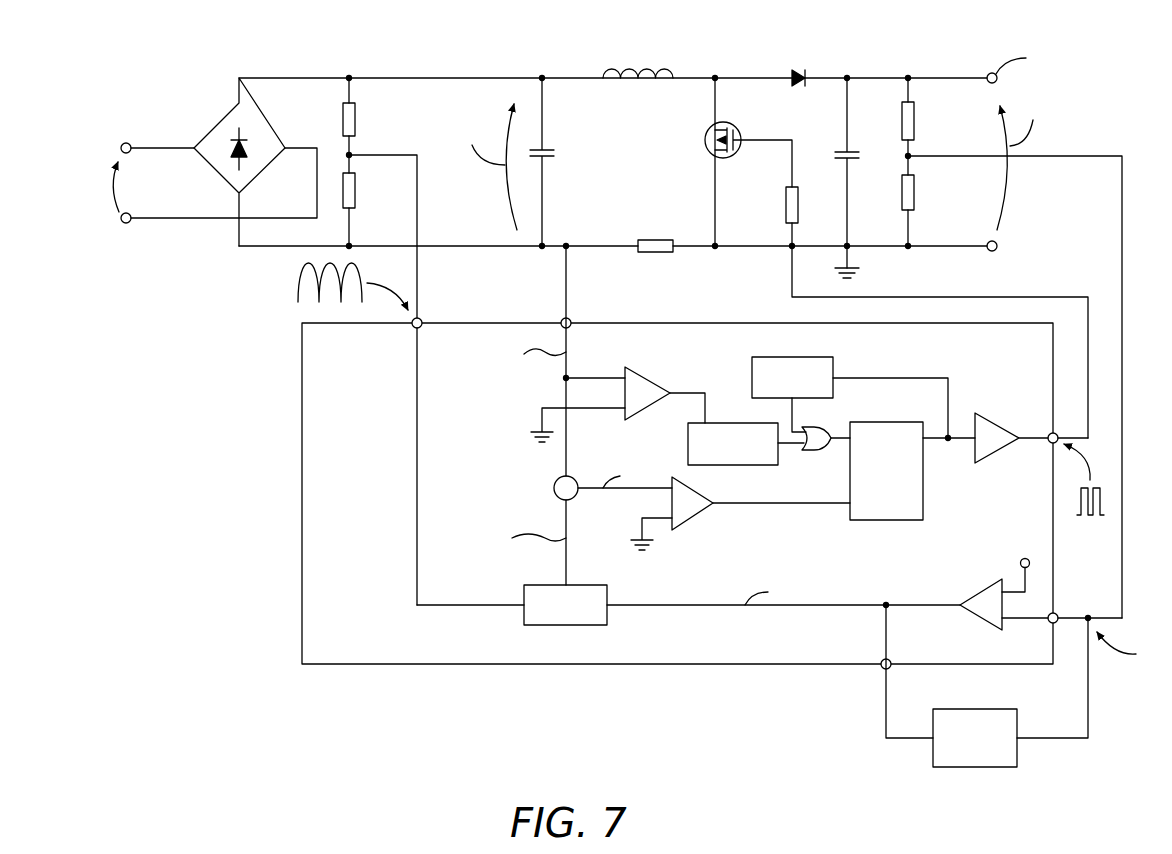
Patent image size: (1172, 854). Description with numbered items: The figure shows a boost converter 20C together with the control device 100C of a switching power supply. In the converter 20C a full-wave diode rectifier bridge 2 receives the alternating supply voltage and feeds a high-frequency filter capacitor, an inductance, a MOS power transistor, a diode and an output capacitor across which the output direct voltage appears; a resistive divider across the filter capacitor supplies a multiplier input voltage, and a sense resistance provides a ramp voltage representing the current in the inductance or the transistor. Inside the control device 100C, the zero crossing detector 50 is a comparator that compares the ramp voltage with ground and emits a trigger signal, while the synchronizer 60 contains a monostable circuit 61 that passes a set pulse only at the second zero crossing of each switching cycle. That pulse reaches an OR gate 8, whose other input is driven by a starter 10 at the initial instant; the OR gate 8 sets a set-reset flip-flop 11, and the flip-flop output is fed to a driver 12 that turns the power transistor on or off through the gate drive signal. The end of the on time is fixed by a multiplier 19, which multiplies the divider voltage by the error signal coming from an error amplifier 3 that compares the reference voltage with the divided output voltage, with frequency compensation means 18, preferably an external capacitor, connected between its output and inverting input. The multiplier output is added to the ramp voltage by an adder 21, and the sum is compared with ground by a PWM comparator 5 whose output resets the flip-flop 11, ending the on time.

The boost converter 20C is at (372, 46).
The full-wave diode rectifier bridge 2 is at (210, 128).
The control device 100C is at (302, 425).
The zero crossing detector 50 is at (648, 380).
The synchronizer 60 is at (646, 437).
The adder 21 is at (554, 488).
The starter 10 is at (805, 356).
The monostable circuit 61 is at (735, 465).
The OR gate 8 is at (815, 452).
The set-reset flip-flop 11 is at (890, 420).
The driver 12 is at (1000, 432).
The PWM comparator 5 is at (693, 520).
The multiplier 19 is at (587, 584).
The error amplifier 3 is at (965, 598).
The frequency compensation means 18 is at (1000, 708).